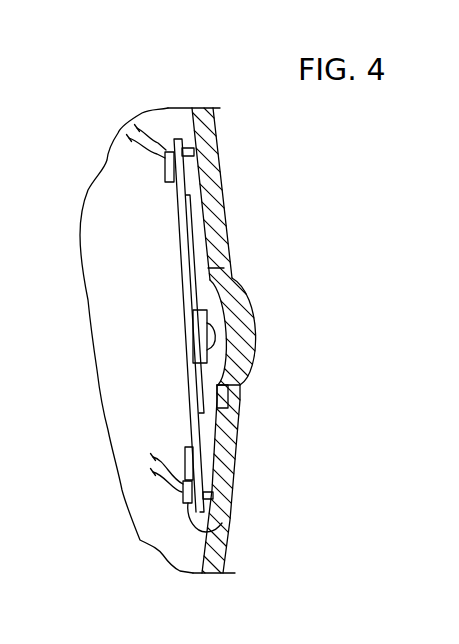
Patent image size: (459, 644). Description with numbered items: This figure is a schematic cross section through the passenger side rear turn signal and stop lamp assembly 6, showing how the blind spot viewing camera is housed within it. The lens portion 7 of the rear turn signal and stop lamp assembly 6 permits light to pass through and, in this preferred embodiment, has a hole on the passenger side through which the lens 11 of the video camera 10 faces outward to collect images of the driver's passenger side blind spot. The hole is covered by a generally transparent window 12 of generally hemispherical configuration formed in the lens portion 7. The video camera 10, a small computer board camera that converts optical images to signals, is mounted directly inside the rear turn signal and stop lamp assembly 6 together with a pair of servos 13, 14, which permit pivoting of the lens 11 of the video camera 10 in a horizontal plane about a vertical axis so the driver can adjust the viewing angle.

The rear turn signal and stop lamp assembly 6 is at (112, 163).
The lens portion 7 is at (220, 186).
The video camera 10 is at (192, 270).
The lens 11 is at (213, 333).
The window 12 is at (250, 313).
The servo 13 is at (173, 138).
The servo 14 is at (222, 523).